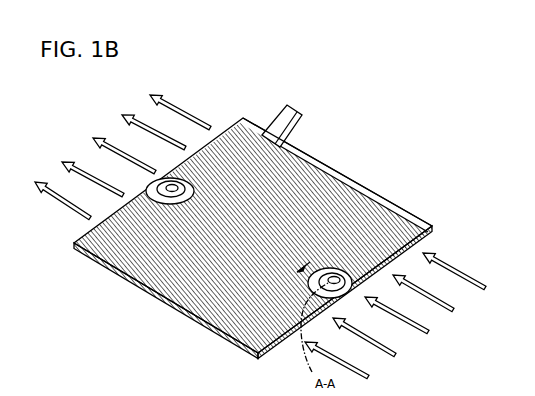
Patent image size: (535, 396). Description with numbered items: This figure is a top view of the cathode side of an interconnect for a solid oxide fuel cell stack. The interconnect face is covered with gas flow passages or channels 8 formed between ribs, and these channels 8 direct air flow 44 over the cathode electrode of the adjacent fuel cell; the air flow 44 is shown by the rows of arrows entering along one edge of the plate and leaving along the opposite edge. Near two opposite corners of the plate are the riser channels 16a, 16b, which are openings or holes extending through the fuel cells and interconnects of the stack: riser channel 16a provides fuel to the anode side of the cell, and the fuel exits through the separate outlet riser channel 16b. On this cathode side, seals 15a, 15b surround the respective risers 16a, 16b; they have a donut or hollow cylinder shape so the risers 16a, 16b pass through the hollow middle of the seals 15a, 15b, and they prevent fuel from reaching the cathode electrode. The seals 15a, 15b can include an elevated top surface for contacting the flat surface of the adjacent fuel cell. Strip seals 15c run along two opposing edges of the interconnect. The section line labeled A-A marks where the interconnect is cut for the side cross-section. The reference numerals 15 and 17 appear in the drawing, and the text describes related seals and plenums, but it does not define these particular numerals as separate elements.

The gas flow passages or channels 8 is at (291, 116).
The top surface 15 is at (292, 160).
The seal 15a is at (174, 179).
The seal 15b is at (335, 277).
The strip seals 15c is at (379, 197).
The riser channel 16a is at (158, 185).
The outlet riser channel 16b is at (348, 296).
The side surface 17 is at (436, 238).
The air flow 44 is at (197, 123).